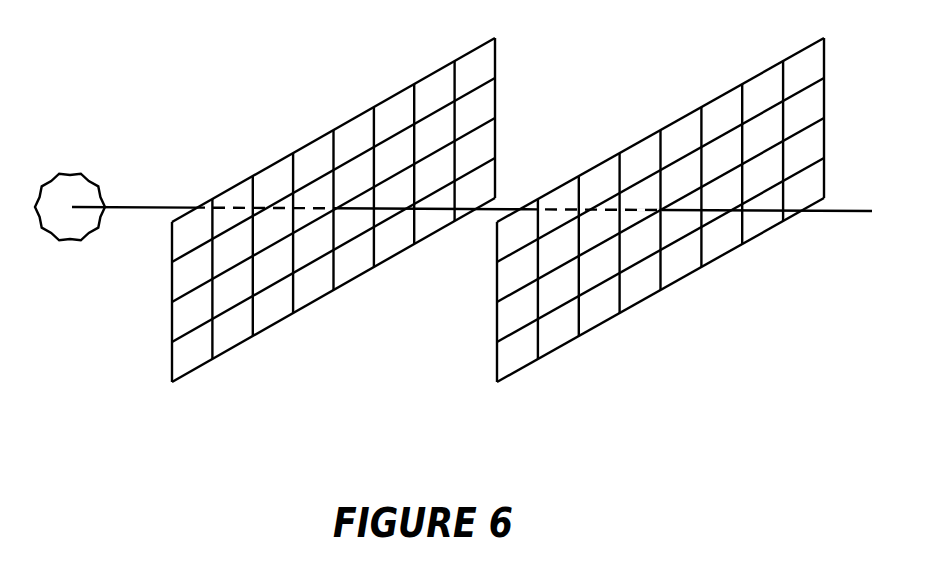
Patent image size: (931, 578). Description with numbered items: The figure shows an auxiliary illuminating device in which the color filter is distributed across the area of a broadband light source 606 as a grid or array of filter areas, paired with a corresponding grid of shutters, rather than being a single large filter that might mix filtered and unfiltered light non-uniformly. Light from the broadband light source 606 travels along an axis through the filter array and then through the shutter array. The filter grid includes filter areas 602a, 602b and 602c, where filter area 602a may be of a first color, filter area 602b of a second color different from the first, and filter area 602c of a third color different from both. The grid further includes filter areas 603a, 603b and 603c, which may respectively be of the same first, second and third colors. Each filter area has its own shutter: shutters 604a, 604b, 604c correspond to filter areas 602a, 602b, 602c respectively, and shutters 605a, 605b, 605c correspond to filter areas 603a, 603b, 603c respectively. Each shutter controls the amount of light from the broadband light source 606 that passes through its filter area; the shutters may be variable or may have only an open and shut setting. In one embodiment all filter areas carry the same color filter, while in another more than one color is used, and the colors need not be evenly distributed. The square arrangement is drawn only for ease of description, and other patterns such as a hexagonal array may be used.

The broadband light source 606 is at (80, 172).
The filter area 602a is at (195, 357).
The filter area 602b is at (235, 335).
The filter area 602c is at (273, 310).
The filter area 603a is at (202, 220).
The filter area 603b is at (233, 195).
The filter area 603c is at (275, 175).
The shutter 604a is at (520, 357).
The shutter 604b is at (560, 335).
The shutter 604c is at (598, 310).
The shutter 605a is at (530, 220).
The shutter 605b is at (567, 203).
The shutter 605c is at (597, 180).